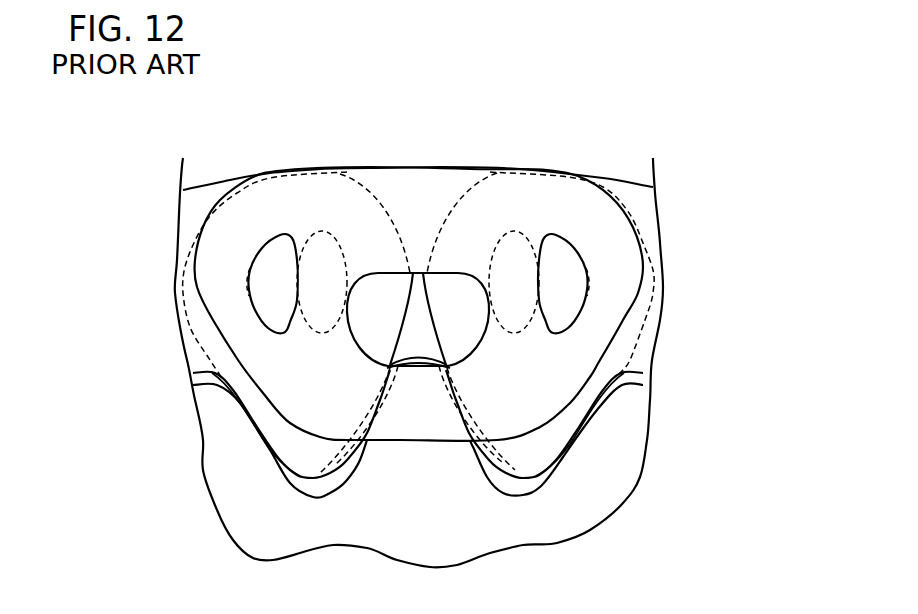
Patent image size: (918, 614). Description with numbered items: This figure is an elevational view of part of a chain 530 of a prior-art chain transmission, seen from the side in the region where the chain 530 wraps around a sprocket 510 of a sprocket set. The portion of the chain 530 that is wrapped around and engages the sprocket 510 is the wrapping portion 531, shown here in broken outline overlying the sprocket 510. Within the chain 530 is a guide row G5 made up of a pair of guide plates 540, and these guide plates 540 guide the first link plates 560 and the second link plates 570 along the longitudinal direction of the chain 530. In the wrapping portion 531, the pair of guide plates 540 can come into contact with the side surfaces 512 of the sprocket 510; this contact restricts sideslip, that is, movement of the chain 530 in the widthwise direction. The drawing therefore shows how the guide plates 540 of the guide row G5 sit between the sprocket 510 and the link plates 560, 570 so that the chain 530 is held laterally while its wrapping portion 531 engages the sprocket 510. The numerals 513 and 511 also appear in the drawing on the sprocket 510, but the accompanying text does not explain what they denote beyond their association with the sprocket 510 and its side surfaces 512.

The guide row G5 is at (366, 169).
The guide plates 540 is at (420, 193).
The wrapping portion 531 is at (550, 108).
The chain 530 is at (418, 264).
The second link plates 570 is at (297, 441).
The goggle body 513 is at (630, 440).
The side surfaces 512 is at (488, 358).
The sprocket 510 is at (497, 484).
The first link plates 560 is at (418, 342).
The cup portion 511 is at (362, 466).